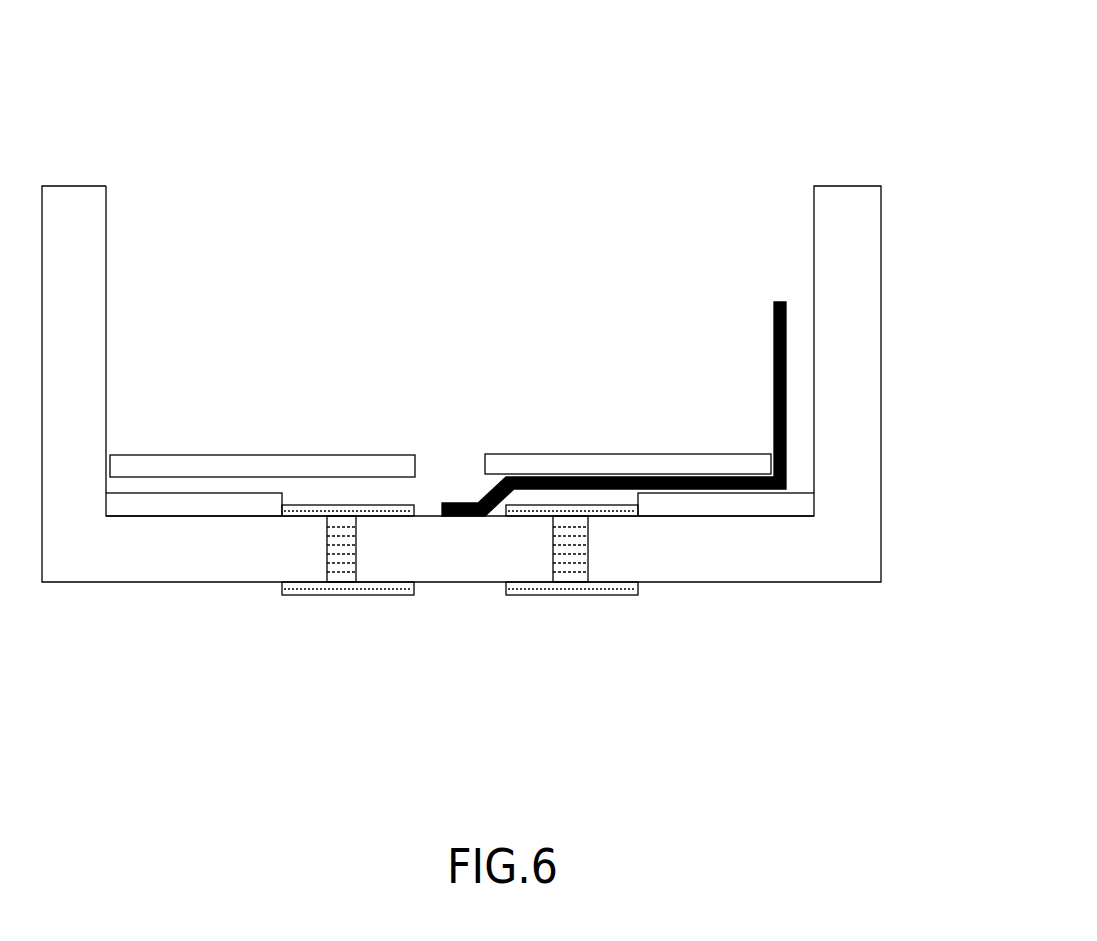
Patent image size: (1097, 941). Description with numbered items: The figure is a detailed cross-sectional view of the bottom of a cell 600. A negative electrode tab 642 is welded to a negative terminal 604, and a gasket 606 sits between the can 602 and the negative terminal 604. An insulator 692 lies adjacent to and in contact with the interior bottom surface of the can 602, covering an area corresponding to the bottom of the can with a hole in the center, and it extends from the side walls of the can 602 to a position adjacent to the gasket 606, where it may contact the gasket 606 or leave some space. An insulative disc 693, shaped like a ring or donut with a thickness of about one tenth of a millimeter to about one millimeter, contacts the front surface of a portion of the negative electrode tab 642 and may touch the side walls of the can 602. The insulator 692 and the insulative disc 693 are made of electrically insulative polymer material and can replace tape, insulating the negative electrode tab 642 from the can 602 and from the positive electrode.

The cell 600 is at (668, 88).
The can 602 is at (814, 211).
The negative terminal 604 is at (448, 583).
The gasket 606 is at (305, 594).
The negative electrode tab 642 is at (482, 502).
The insulator 692 is at (142, 505).
The insulative disc 693 is at (300, 455).